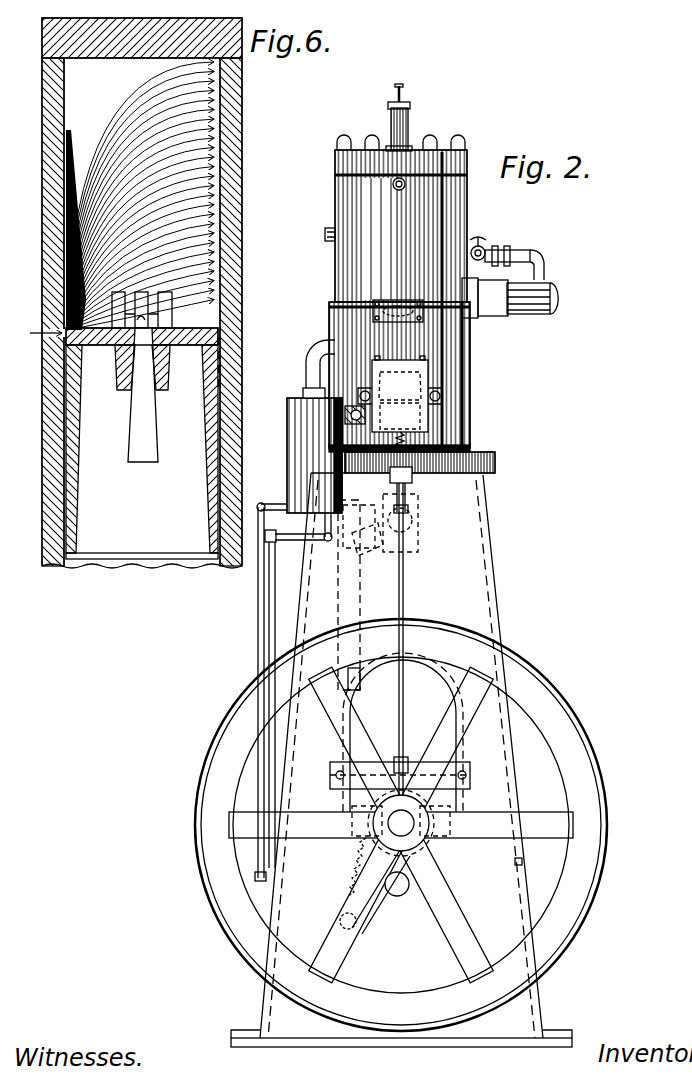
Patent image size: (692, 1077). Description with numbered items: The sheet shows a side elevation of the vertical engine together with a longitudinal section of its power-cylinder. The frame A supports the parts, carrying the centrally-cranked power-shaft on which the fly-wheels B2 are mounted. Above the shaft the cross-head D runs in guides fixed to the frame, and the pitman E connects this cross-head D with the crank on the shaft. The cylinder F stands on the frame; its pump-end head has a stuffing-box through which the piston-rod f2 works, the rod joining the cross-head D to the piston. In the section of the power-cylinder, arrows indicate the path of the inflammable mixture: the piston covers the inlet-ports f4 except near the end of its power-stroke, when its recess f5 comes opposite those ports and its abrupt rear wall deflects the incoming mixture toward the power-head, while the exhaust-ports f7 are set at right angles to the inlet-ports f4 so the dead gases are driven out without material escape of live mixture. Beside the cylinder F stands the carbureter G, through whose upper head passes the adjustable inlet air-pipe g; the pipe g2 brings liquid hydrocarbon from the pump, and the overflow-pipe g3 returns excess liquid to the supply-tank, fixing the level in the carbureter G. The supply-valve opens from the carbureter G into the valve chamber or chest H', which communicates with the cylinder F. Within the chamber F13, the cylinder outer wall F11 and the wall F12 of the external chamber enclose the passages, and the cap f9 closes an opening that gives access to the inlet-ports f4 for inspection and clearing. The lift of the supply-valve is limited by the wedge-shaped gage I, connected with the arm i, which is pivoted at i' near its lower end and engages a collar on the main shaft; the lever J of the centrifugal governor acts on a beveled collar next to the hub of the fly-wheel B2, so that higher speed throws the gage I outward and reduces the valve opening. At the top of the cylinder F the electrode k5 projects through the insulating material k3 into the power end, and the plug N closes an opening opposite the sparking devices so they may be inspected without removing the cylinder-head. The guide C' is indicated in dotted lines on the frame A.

In FIG. 6, the cylinder F is at (243, 196).
In FIG. 2, the cylinder F is at (377, 218).
In FIG. 6, the piston-rod f2 is at (147, 462).
In FIG. 6, the inlet-ports f4 is at (42, 336).
In FIG. 6, the recess f5 is at (114, 304).
In FIG. 6, the exhaust-ports f7 is at (160, 308).
In FIG. 6, the piston chamber F13 is at (142, 443).
In FIG. 2, the insulating material k3 is at (390, 125).
In FIG. 2, the electrode k5 is at (404, 97).
In FIG. 2, the plug N is at (395, 192).
In FIG. 2, the cylinder head F11 is at (315, 215).
In FIG. 2, the cylinder jacket F12 is at (470, 397).
In FIG. 2, the cap f9 is at (373, 307).
In FIG. 2, the valve chamber or chest H' is at (393, 403).
In FIG. 2, the inlet air-pipe g is at (303, 367).
In FIG. 2, the carbureter G is at (314, 450).
In FIG. 2, the pipe g2 is at (258, 623).
In FIG. 2, the overflow-pipe g3 is at (268, 581).
In FIG. 2, the frame A is at (401, 760).
In FIG. 2, the wedge-shaped gage I is at (407, 493).
In FIG. 2, the cross-head D is at (380, 525).
In FIG. 2, the arm i is at (416, 539).
In FIG. 2, the guide C' is at (331, 595).
In FIG. 2, the pitman E is at (408, 690).
In FIG. 2, the pivot i' is at (413, 741).
In FIG. 2, the fly-wheels B2 is at (560, 707).
In FIG. 2, the lever J is at (398, 897).